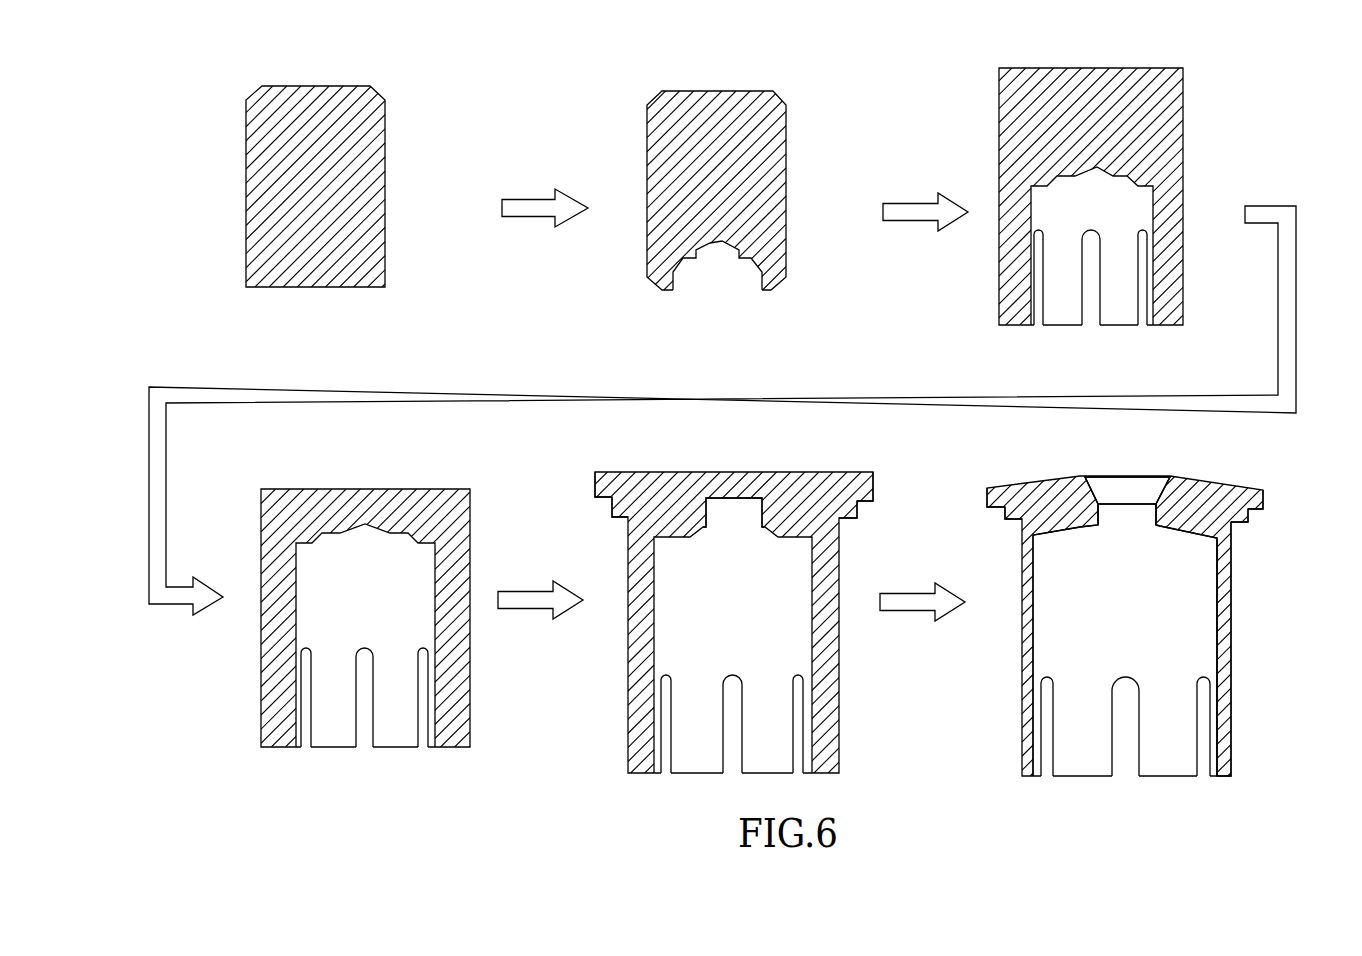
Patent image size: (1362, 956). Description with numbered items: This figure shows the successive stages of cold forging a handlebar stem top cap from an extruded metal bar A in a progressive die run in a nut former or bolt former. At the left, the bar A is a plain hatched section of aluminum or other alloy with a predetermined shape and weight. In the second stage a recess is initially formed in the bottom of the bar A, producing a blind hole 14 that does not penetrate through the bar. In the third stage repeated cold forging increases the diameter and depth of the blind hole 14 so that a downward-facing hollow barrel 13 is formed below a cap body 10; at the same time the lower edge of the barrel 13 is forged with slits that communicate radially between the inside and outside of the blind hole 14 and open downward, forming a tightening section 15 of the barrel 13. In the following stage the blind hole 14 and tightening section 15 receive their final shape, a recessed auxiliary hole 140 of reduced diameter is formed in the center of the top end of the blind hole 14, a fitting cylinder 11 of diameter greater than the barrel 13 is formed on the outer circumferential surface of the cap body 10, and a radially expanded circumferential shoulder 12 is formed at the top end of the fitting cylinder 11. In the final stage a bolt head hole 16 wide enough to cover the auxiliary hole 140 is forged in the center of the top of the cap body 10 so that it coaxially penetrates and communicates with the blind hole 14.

The extruded metal bar A is at (352, 100).
The cap body 10 is at (1233, 485).
The fitting cylinder 11 is at (860, 513).
The circumferential shoulder 12 is at (860, 507).
The hollow barrel 13 is at (1170, 285).
The blind hole 14 is at (716, 278).
The tightening section 15 is at (1089, 313).
The bolt head hole 16 is at (1125, 485).
The auxiliary hole 140 is at (728, 515).